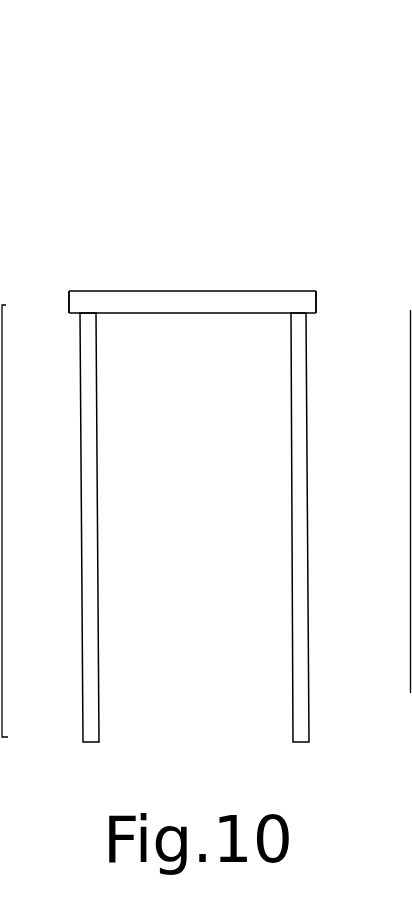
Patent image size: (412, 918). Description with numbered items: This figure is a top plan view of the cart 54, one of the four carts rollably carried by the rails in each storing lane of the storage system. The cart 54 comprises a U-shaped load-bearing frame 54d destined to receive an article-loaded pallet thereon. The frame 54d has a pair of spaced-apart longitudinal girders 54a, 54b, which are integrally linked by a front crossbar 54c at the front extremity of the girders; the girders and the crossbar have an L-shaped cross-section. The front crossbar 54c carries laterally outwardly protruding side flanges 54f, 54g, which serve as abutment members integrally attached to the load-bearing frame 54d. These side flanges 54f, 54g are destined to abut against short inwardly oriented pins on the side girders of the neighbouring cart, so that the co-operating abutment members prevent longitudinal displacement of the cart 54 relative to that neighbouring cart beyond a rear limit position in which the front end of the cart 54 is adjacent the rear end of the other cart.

The cart 54 is at (183, 237).
The longitudinal girder 54a is at (87, 393).
The longitudinal girder 54b is at (305, 453).
The front crossbar 54c is at (145, 302).
The U-shaped load-bearing frame 54d is at (217, 290).
The side flange 54f is at (77, 300).
The side flange 54g is at (312, 300).